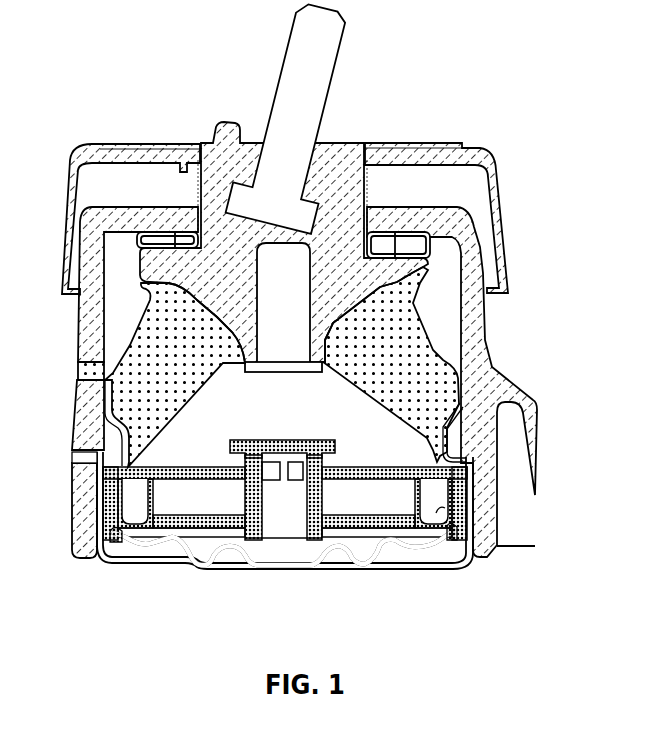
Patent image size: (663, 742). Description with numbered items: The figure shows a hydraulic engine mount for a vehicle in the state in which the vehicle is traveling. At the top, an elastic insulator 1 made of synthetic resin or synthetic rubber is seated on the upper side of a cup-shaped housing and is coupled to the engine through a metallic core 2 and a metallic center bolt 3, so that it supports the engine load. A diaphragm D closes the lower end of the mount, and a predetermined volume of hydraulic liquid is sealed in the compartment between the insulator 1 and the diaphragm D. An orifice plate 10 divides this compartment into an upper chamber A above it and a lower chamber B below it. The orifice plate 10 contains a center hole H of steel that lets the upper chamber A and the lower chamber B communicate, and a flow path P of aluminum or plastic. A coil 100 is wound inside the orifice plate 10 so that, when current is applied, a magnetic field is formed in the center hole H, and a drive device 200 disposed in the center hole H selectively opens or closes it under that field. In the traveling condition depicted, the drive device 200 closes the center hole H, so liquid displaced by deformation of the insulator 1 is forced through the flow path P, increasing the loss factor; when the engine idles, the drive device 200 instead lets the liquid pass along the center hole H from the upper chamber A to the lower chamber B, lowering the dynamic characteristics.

The insulator 1 is at (248, 367).
The core 2 is at (345, 157).
The center bolt 3 is at (282, 100).
The orifice plate 10 is at (453, 497).
The coil 100 is at (375, 500).
The drive device 200 is at (330, 457).
The upper chamber A is at (178, 435).
The lower chamber B is at (185, 557).
The diaphragm D is at (278, 573).
The center hole H is at (247, 492).
The flow path P is at (443, 517).